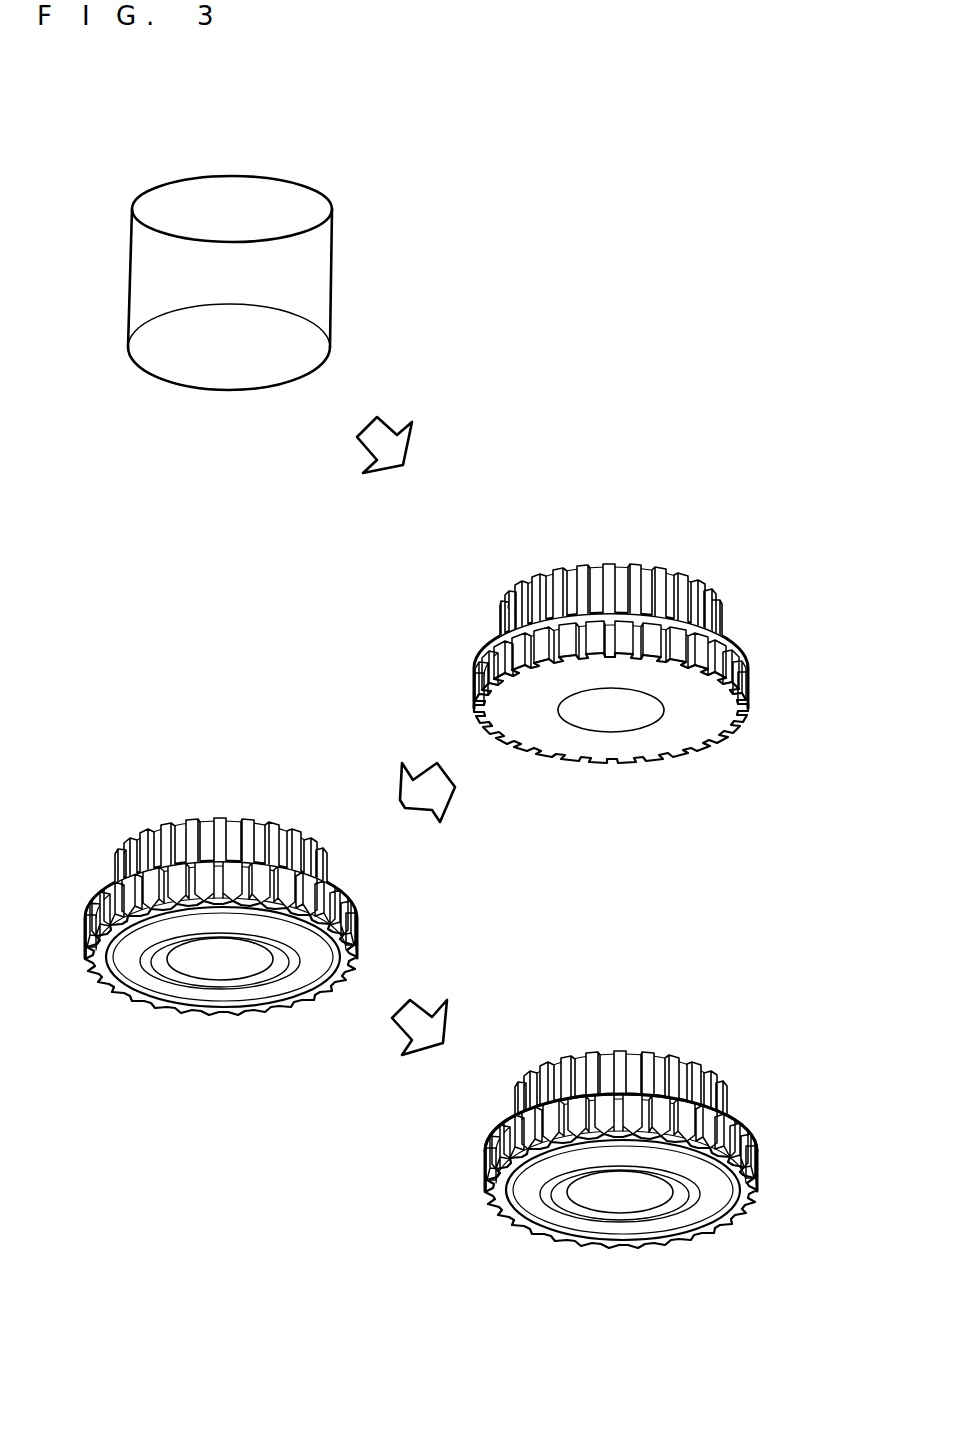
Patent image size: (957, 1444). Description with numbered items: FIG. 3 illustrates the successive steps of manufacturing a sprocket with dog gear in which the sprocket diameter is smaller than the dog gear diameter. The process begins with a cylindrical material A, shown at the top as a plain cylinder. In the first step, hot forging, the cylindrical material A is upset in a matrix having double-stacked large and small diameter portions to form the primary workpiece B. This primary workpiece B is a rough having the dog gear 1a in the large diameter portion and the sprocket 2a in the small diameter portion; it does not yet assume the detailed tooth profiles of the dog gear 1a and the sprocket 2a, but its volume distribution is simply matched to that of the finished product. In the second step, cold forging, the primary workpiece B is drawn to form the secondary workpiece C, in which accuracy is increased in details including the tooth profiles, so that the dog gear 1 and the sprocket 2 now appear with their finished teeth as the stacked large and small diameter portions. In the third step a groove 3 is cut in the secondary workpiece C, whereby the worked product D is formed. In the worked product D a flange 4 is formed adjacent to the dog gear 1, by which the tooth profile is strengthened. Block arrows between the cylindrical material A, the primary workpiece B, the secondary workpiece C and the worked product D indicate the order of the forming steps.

The cylindrical material A is at (370, 257).
The primary workpiece B is at (562, 608).
The secondary workpiece C is at (260, 773).
The worked product D is at (566, 1129).
The dog gear 1 is at (357, 930).
The dog gear 1a is at (497, 667).
The sprocket 2 is at (320, 853).
The sprocket 2a is at (523, 600).
The groove 3 is at (493, 1126).
The flange 4 is at (663, 1108).